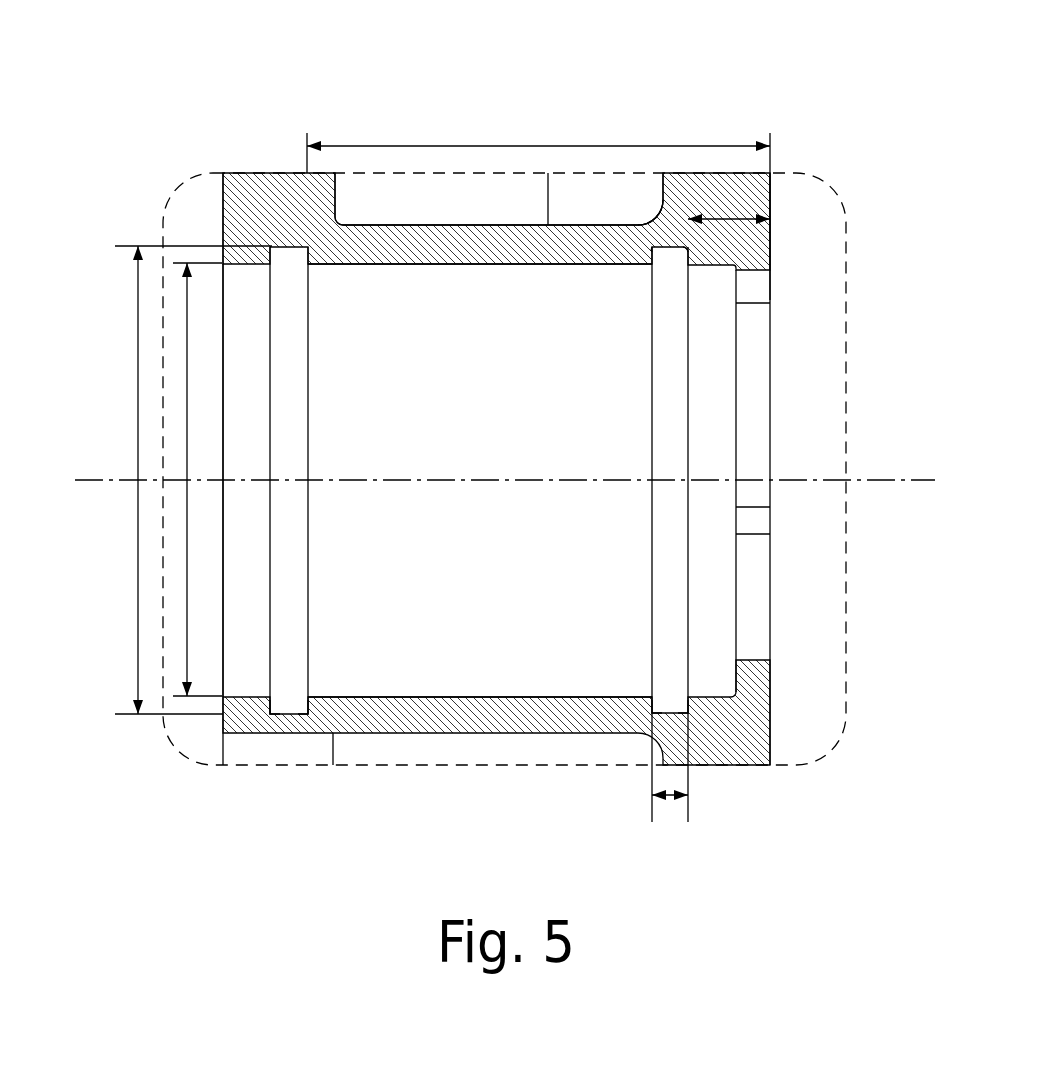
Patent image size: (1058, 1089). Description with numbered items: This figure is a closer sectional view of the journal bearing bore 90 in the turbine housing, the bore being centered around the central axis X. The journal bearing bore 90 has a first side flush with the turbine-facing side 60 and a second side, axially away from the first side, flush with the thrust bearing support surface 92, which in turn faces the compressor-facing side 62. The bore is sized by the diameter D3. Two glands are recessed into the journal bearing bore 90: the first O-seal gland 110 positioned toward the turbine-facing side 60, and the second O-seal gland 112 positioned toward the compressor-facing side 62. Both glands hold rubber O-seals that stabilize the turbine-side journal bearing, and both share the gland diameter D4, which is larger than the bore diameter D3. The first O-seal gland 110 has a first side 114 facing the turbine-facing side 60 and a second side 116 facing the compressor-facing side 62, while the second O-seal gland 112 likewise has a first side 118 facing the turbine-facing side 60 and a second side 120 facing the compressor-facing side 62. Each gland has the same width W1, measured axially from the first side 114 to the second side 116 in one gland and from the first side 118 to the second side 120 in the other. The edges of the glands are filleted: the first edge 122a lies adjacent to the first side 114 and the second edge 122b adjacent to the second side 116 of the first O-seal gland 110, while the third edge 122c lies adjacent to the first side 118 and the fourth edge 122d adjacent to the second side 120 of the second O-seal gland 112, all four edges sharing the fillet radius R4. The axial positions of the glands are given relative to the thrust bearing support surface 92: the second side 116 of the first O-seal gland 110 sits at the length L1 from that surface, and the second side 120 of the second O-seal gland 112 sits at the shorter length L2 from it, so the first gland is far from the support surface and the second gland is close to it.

The turbine-facing side 60 is at (222, 222).
The compressor-facing side 62 is at (862, 289).
The journal bearing bore 90 is at (223, 312).
The thrust bearing support surface 92 is at (771, 240).
The first O-seal gland 110 is at (284, 247).
The second O-seal gland 112 is at (675, 247).
The first side 114 is at (268, 247).
The second side 116 is at (308, 251).
The first side 118 is at (652, 247).
The second side 120 is at (690, 256).
The first edge 122a is at (272, 715).
The second edge 122b is at (306, 715).
The third edge 122c is at (652, 713).
The fourth edge 122d is at (688, 713).
The diameter D3 is at (187, 582).
The diameter D4 is at (138, 383).
The length L1 is at (555, 146).
The length L2 is at (775, 178).
The width W1 is at (670, 800).
The fillet radius R4 is at (652, 250).
The central axis X is at (884, 481).